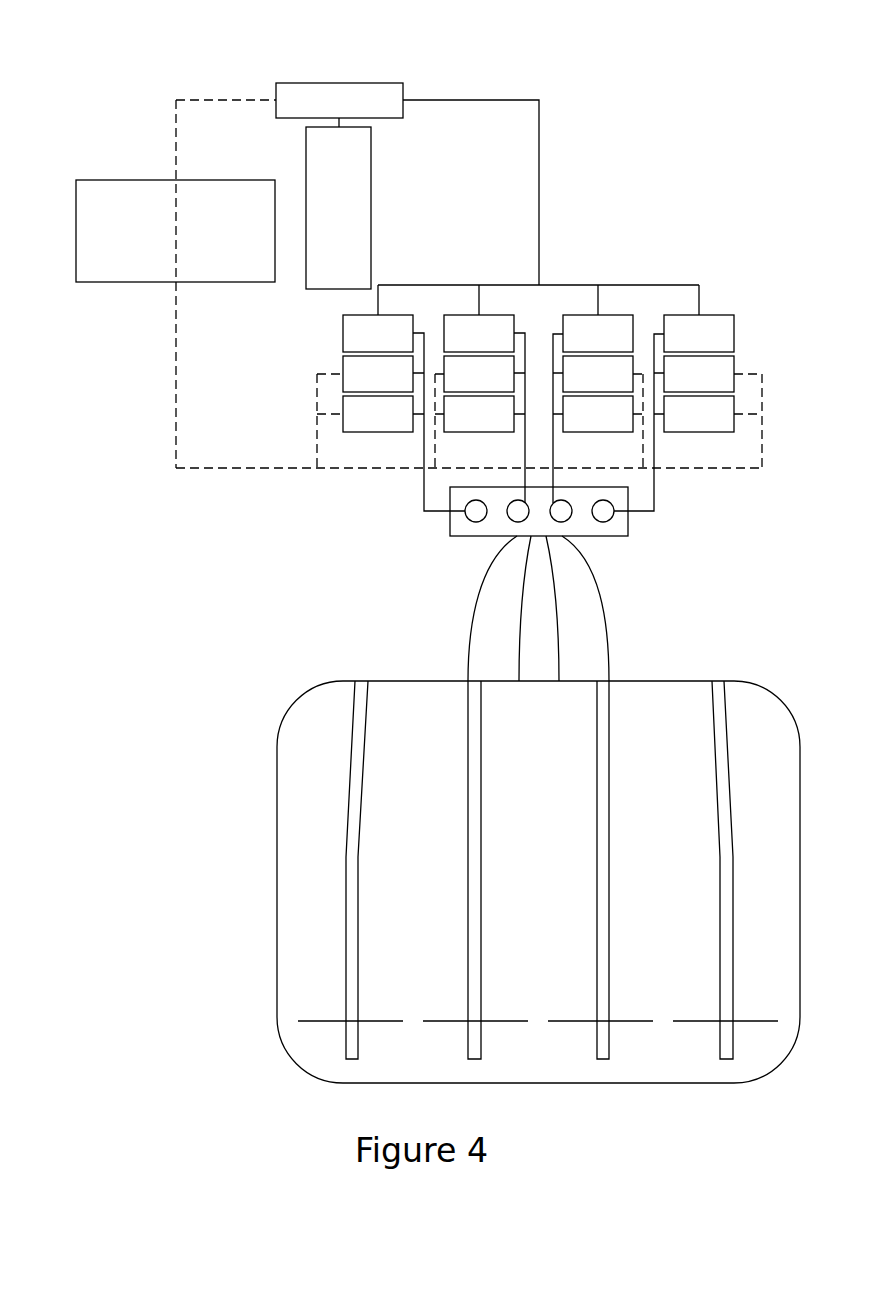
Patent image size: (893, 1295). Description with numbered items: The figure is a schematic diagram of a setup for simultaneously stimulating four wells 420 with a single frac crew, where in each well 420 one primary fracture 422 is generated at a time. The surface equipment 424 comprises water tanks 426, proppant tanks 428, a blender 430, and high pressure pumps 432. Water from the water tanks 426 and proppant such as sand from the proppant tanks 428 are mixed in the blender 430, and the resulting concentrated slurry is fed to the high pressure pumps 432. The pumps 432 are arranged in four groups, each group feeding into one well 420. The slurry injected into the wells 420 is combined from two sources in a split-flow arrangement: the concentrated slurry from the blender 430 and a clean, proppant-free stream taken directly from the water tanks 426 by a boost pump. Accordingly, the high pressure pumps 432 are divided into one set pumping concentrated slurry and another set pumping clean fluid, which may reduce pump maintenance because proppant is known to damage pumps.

The well 420 is at (342, 1047).
The primary fracture 422 is at (323, 1021).
The surface equipment 424 is at (136, 126).
The water tank 426 is at (76, 232).
The proppant tank 428 is at (306, 284).
The blender 430 is at (328, 83).
The high pressure pump 432 is at (722, 313).